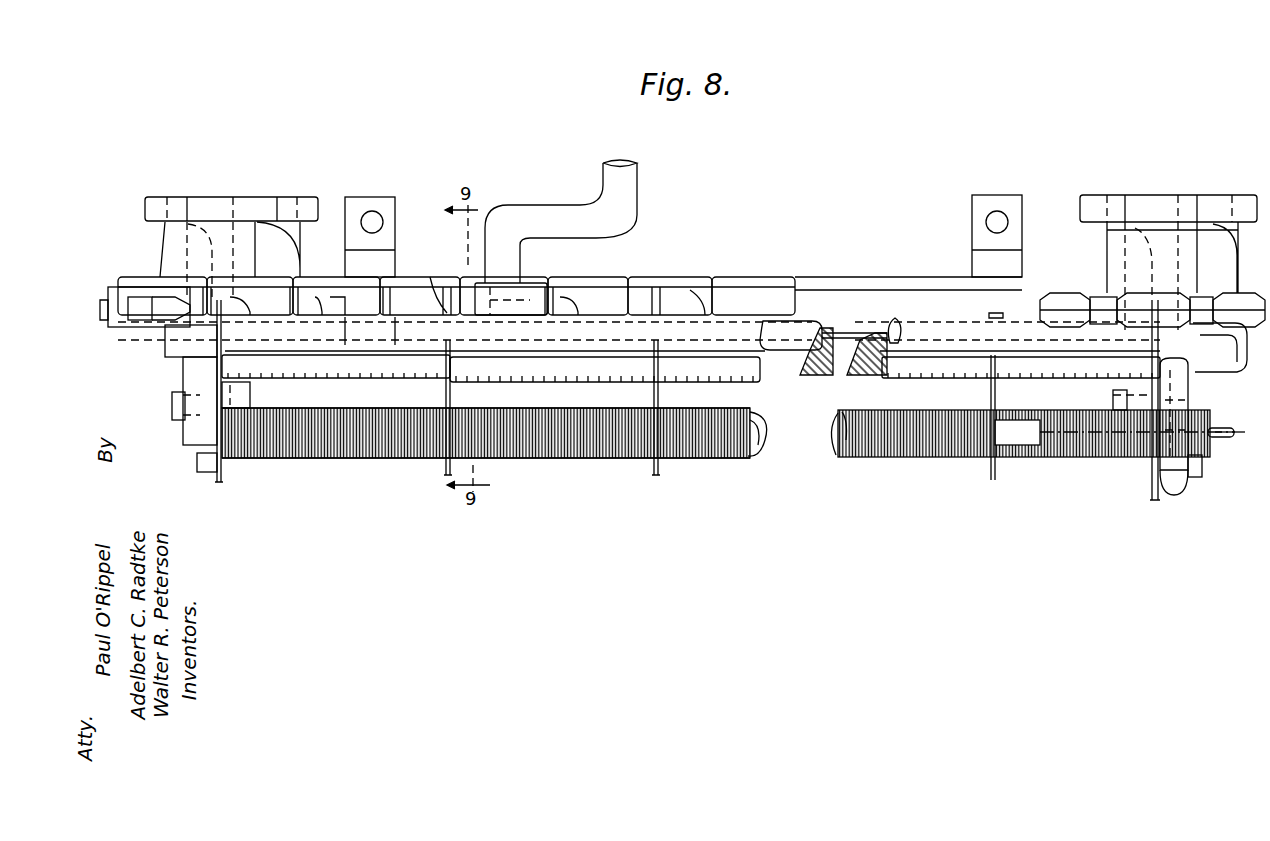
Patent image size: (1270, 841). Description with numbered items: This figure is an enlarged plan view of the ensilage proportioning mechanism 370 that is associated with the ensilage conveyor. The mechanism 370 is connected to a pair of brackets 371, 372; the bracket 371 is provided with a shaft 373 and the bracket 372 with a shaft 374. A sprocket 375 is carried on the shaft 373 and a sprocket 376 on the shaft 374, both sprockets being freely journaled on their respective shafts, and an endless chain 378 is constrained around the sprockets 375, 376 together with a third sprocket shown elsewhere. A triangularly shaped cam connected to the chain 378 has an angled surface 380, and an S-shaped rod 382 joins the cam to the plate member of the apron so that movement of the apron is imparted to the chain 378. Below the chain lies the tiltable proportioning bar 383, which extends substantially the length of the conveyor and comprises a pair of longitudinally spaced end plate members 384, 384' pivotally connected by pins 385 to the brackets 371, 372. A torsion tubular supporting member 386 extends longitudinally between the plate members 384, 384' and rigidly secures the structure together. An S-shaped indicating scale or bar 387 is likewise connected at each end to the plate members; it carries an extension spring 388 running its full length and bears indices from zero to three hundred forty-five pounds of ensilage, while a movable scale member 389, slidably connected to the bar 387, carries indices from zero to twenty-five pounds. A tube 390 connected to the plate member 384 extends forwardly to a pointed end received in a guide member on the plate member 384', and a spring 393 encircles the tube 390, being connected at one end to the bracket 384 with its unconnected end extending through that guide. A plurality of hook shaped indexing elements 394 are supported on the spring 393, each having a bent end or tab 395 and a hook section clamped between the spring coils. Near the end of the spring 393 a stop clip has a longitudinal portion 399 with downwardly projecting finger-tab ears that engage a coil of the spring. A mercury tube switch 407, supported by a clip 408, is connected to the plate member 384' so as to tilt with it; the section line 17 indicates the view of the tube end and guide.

The section line 17 is at (965, 432).
The ensilage proportioning mechanism 370 is at (938, 462).
The bracket 371 is at (1200, 205).
The bracket 372 is at (296, 210).
The shaft 373 is at (1145, 205).
The shaft 374 is at (212, 215).
The sprocket 375 is at (1237, 370).
The sprocket 376 is at (100, 300).
The endless chain 378 is at (698, 280).
The angled surface 380 is at (527, 300).
The S-shaped rod 382 is at (632, 188).
The tiltable proportioning bar 383 is at (578, 468).
The end plate member 384 is at (237, 407).
The end plate member 384' is at (1117, 406).
The pin 385 is at (172, 396).
The torsion tubular supporting member 386 is at (798, 318).
The S-shaped indicating scale or bar 387 is at (793, 376).
The extension spring 388 is at (878, 342).
The movable scale member 389 is at (590, 380).
The tube 390 is at (766, 458).
The spring 393 is at (396, 462).
The indexing element or hook shaped clip 394 is at (448, 478).
The bent end or tab 395 is at (441, 295).
The longitudinal portion 399 is at (1017, 448).
The mercury tube switch 407 is at (1175, 493).
The clip 408 is at (1200, 475).